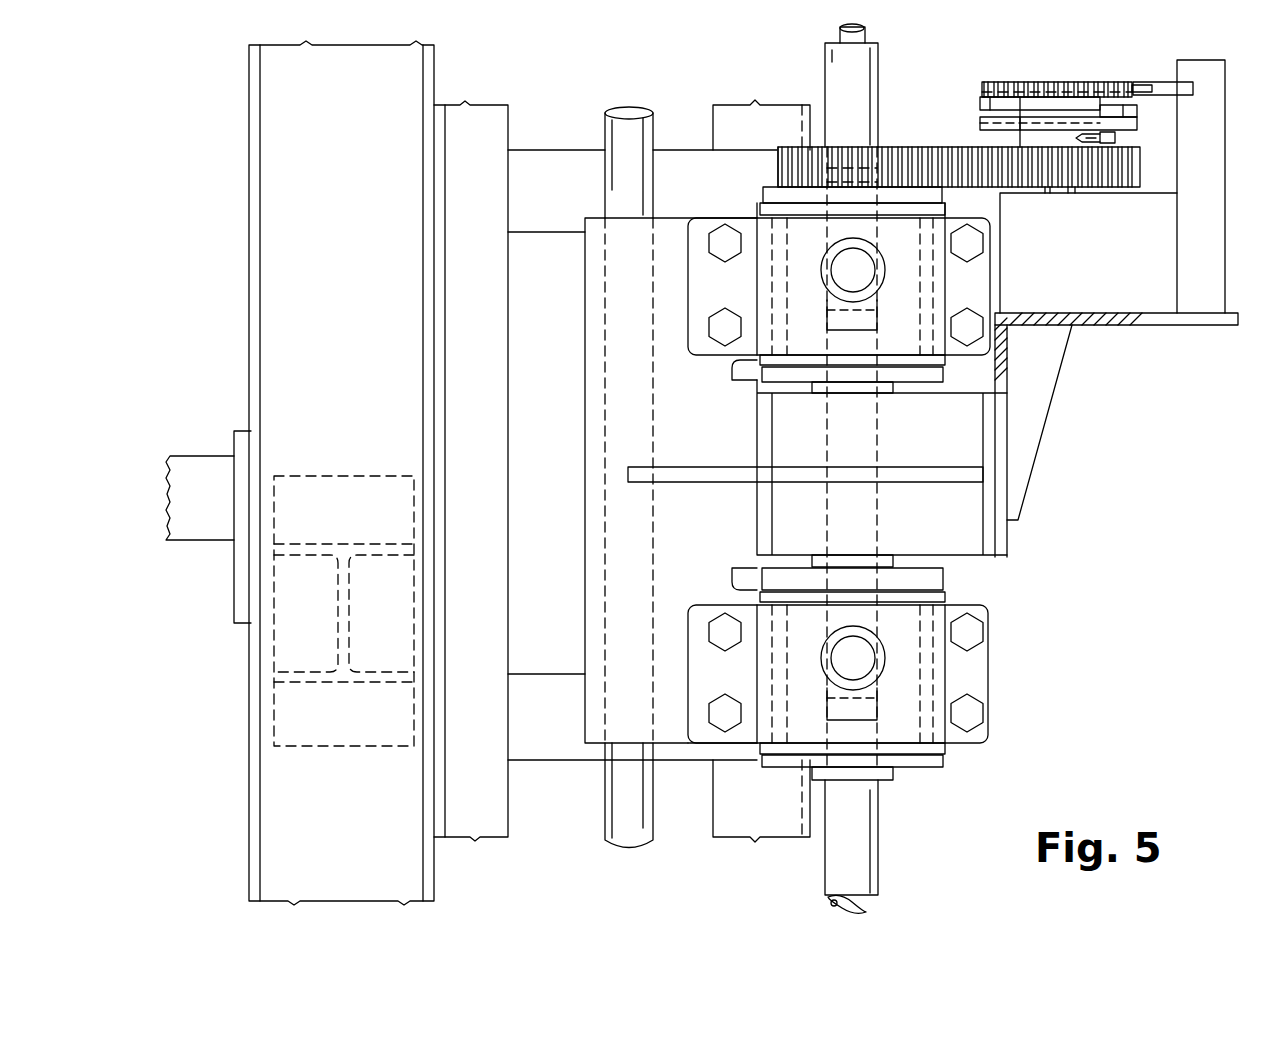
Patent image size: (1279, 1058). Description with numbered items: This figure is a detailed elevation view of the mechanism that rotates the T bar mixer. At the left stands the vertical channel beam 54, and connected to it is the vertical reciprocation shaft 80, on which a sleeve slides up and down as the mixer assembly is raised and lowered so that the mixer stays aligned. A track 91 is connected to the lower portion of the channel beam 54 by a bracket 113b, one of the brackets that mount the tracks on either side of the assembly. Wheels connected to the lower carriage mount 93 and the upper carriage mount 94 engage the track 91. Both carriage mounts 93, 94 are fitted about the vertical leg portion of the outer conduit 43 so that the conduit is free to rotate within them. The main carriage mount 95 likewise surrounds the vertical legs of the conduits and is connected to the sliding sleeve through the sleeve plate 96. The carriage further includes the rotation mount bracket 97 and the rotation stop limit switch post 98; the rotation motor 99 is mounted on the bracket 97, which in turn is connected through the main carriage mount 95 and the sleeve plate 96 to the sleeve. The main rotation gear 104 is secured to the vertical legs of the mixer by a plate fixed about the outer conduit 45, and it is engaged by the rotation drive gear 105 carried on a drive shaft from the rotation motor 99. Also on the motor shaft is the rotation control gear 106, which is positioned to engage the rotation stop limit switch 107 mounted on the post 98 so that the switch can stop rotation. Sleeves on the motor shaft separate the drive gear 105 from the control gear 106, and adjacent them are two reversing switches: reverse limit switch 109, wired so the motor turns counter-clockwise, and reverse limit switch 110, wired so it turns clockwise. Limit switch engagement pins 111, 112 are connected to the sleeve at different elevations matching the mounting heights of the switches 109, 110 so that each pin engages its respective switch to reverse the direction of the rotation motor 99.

The vertical channel beam 54 is at (434, 78).
The bracket 113b is at (557, 158).
The vertical reciprocation shaft 80 is at (647, 128).
The track 91 is at (818, 117).
The outer conduit 43 is at (872, 840).
The outer conduit 45 is at (835, 906).
The main rotation gear 104 is at (920, 152).
The rotation drive gear 105 is at (1083, 180).
The rotation control gear 106 is at (1070, 83).
The rotation stop limit switch 107 is at (1158, 80).
The limit switch engagement pin 112 is at (978, 107).
The limit switch engagement pin 111 is at (1140, 109).
The reverse limit switch 110 is at (977, 120).
The reverse limit switch 109 is at (1117, 135).
The rotation motor 99 is at (1138, 270).
The rotation stop limit switch post 98 is at (1225, 262).
The rotation mount bracket 97 is at (1063, 368).
The main carriage mount 95 is at (1028, 478).
The sleeve plate 96 is at (698, 472).
The upper carriage mount 94 is at (983, 280).
The lower carriage mount 93 is at (983, 678).